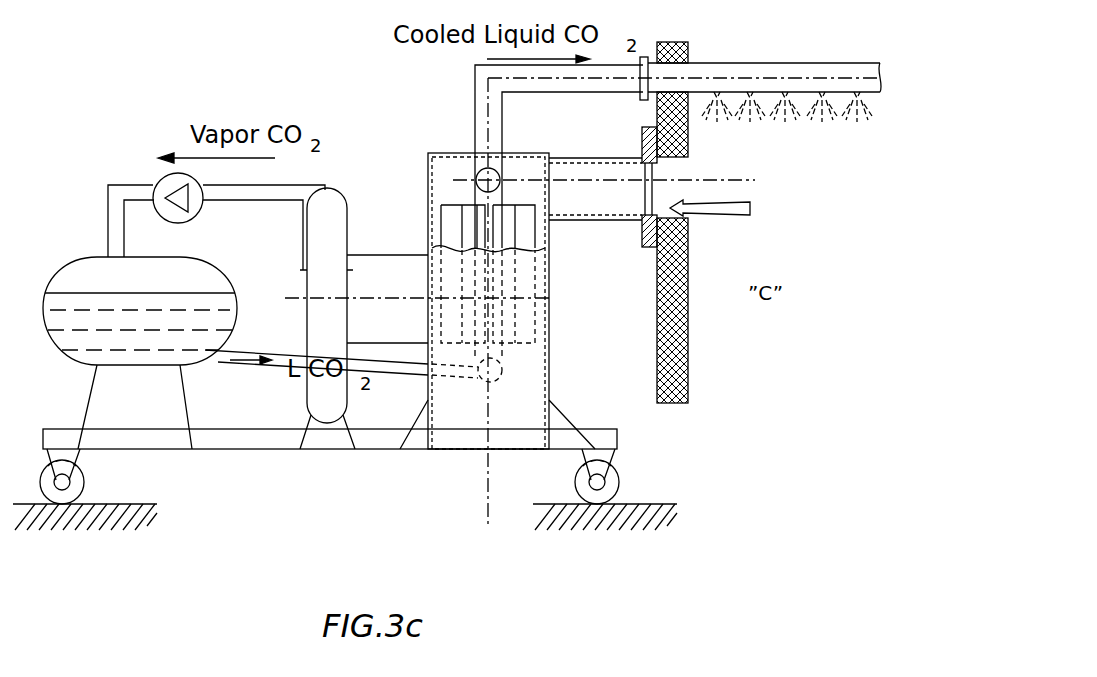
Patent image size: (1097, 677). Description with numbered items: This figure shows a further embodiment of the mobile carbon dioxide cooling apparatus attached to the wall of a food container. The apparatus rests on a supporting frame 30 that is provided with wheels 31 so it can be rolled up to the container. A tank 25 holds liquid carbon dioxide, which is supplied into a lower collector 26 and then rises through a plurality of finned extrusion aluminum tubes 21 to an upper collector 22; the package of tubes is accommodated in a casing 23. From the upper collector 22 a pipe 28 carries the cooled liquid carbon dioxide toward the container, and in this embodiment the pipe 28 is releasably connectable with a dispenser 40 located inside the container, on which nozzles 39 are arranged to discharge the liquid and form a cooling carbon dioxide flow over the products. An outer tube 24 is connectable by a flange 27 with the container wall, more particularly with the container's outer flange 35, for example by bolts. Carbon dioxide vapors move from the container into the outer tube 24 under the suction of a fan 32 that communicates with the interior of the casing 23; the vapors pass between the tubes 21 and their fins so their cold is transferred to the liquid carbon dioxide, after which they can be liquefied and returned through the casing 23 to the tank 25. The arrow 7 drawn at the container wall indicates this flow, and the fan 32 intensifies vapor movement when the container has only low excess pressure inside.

The air flow 7 is at (700, 212).
The extrusion aluminum tubes 21 is at (448, 240).
The collector 22 is at (478, 168).
The casing 23 is at (430, 200).
The outer tube 24 is at (562, 158).
The tank 25 is at (60, 274).
The lower collector 26 is at (502, 364).
The flange 27 is at (649, 226).
The pipe 28 is at (583, 172).
The supporting frame 30 is at (72, 444).
The wheels 31 is at (75, 488).
The fan 32 is at (335, 225).
The outer flange 35 is at (656, 243).
The nozzles 39 is at (858, 99).
The dispenser 40 is at (737, 72).